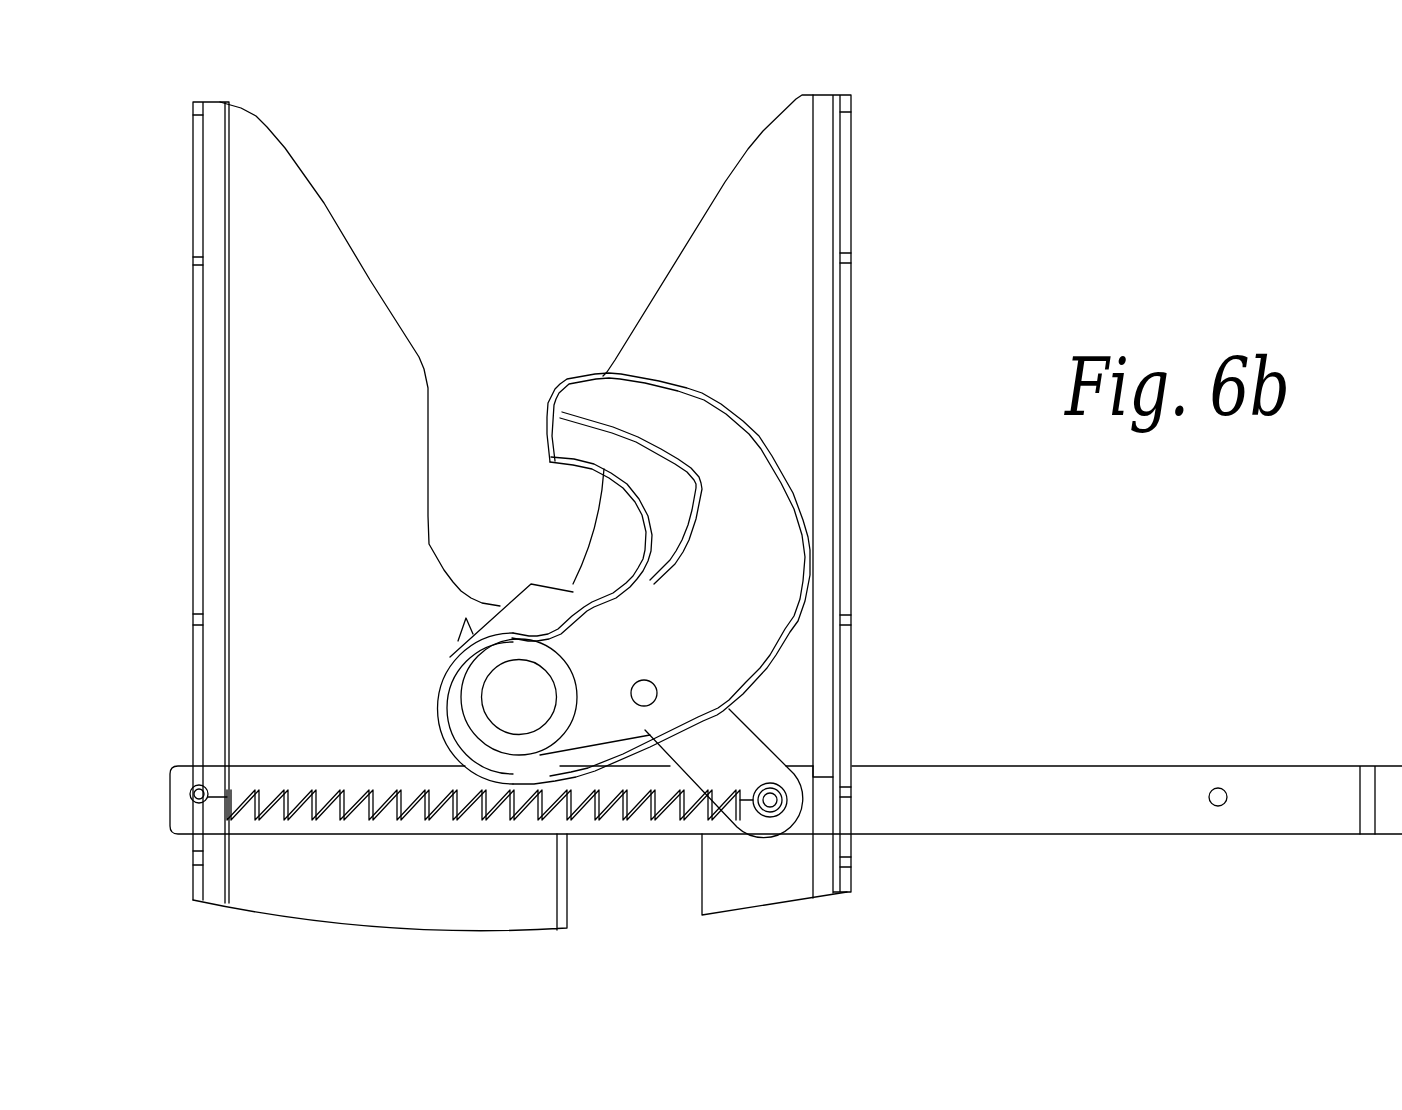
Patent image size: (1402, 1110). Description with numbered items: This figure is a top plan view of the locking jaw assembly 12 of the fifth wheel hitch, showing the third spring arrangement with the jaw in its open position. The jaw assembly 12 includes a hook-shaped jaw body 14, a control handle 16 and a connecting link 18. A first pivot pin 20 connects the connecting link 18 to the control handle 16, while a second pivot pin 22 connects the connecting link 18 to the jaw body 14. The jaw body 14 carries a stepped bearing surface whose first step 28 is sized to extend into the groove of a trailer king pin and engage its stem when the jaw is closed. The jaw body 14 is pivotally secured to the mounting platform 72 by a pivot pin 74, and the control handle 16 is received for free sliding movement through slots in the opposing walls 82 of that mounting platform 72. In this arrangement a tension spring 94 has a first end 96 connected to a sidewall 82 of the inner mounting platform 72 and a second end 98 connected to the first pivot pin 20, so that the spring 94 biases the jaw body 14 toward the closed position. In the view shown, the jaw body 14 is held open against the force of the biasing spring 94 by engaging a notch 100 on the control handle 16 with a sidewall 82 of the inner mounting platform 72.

The locking jaw assembly 12 is at (505, 334).
The jaw body 14 is at (789, 568).
The control handle 16 is at (985, 778).
The connecting link 18 is at (738, 771).
The first pivot pin 20 is at (773, 825).
The second pivot pin 22 is at (648, 686).
The first step 28 is at (640, 560).
The mounting platform 72 is at (249, 448).
The pivot pin 74 is at (532, 705).
The walls 82 is at (197, 699).
The tension spring 94 is at (515, 818).
The first end 96 is at (187, 792).
The second end 98 is at (807, 790).
The notch 100 is at (823, 762).